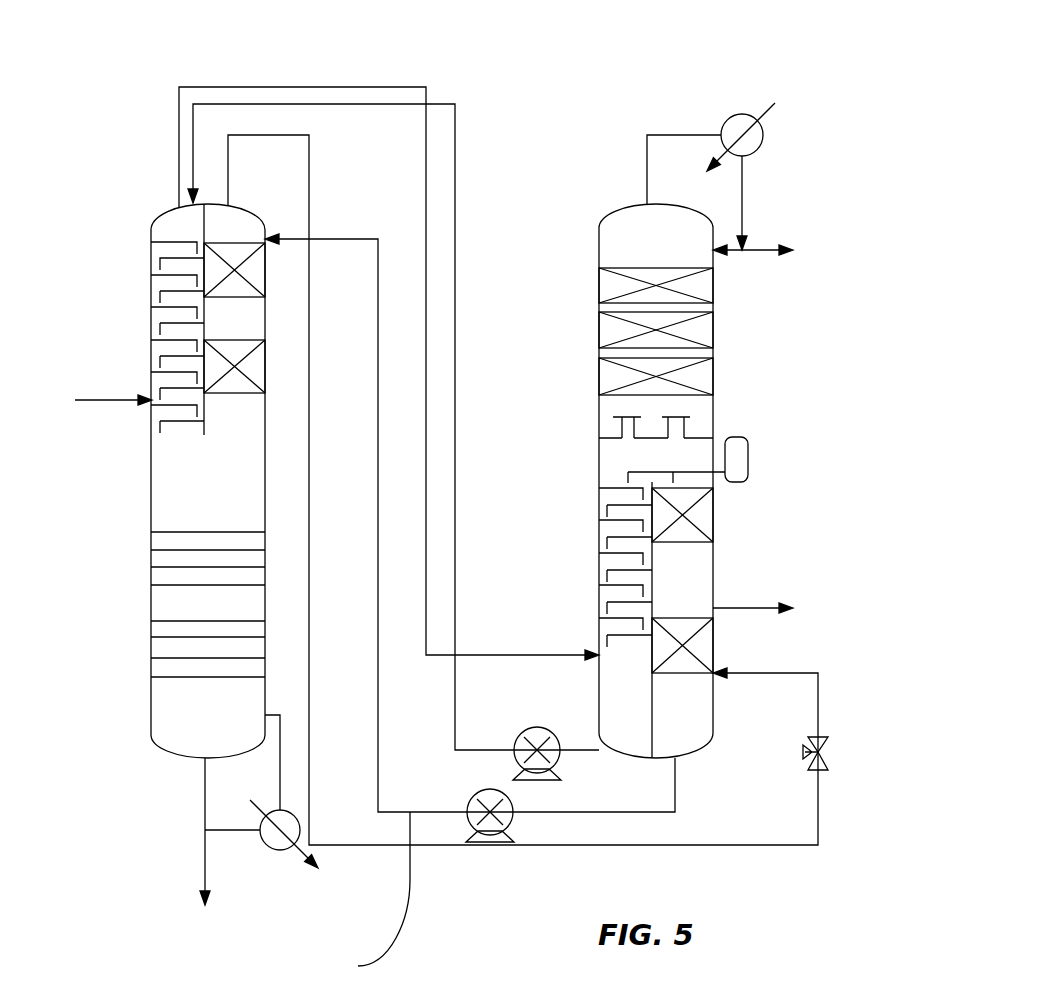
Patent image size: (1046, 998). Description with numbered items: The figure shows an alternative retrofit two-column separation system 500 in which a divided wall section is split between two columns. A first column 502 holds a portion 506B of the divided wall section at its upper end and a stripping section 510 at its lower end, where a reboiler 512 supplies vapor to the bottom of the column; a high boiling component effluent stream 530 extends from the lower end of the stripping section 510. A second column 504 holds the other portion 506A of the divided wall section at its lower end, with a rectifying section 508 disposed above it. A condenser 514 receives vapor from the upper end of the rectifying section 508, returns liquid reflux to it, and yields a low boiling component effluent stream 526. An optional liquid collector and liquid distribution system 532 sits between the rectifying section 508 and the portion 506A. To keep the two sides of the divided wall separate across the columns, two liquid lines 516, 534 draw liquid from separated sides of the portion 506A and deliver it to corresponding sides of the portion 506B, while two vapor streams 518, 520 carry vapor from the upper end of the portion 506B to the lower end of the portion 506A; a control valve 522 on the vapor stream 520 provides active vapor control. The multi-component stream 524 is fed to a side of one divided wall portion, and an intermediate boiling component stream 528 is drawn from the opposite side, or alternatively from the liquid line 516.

The separation system 500 is at (545, 50).
The first column 502 is at (151, 500).
The second column 504 is at (599, 453).
The portion of the divided wall section 506A is at (722, 758).
The portion of the divided wall section 506B is at (145, 447).
The rectifying section 508 is at (593, 397).
The stripping section 510 is at (145, 740).
The reboiler 512 is at (280, 852).
The condenser 514 is at (763, 140).
The liquid line 516 is at (358, 966).
The vapor stream 518 is at (390, 87).
The vapor stream 520 is at (309, 170).
The control valve 522 is at (824, 752).
The multi-component stream 524 is at (97, 398).
The low boiling component effluent stream 526 is at (760, 252).
The intermediate boiling component stream 528 is at (762, 610).
The high boiling component effluent stream 530 is at (205, 862).
The liquid collector and liquid distribution system 532 is at (748, 455).
The liquid line 534 is at (458, 154).